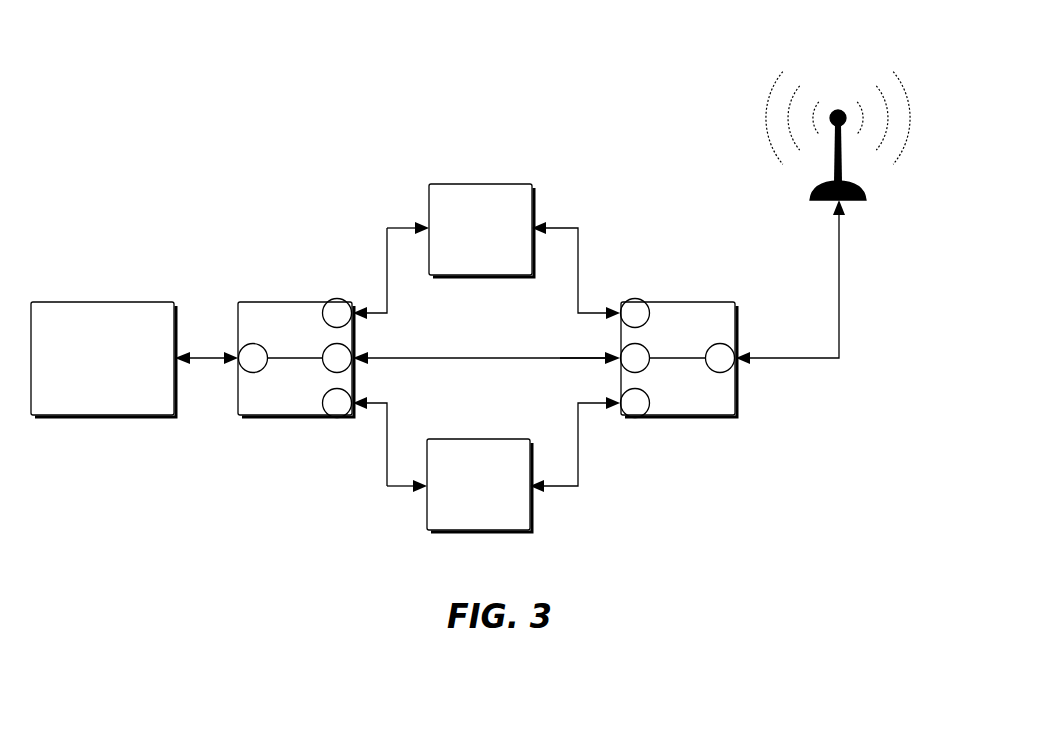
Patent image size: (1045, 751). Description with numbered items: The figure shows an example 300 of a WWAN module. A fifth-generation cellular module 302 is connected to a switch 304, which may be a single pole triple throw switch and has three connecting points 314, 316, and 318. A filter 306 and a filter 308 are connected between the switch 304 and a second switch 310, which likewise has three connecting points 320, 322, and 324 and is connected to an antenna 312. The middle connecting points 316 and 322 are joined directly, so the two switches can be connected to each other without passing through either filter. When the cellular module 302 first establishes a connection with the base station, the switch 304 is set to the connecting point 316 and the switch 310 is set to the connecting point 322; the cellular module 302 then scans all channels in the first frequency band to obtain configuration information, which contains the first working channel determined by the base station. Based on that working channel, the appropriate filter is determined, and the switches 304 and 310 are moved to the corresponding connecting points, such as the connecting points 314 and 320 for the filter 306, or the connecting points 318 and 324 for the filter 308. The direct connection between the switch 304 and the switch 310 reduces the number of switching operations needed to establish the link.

The example of the WWAN module 300 is at (240, 60).
The 5G module 302 is at (107, 300).
The switch 304 is at (265, 301).
The filter 306 is at (480, 183).
The filter 308 is at (480, 438).
The switch 310 is at (682, 302).
The antenna 312 is at (862, 63).
The connecting point 314 is at (353, 303).
The connecting point 316 is at (355, 347).
The connecting point 318 is at (355, 398).
The connecting point 320 is at (617, 303).
The connecting point 322 is at (617, 355).
The connecting point 324 is at (617, 398).